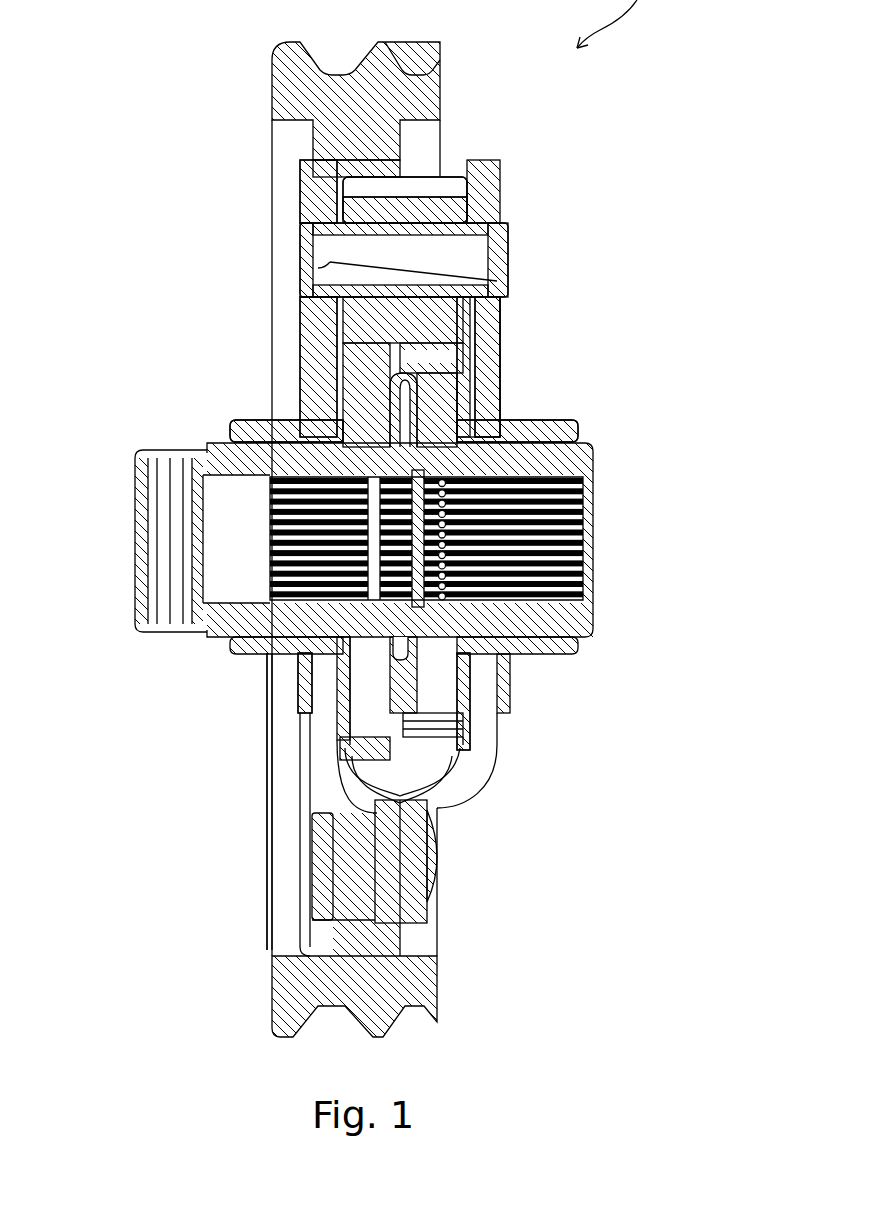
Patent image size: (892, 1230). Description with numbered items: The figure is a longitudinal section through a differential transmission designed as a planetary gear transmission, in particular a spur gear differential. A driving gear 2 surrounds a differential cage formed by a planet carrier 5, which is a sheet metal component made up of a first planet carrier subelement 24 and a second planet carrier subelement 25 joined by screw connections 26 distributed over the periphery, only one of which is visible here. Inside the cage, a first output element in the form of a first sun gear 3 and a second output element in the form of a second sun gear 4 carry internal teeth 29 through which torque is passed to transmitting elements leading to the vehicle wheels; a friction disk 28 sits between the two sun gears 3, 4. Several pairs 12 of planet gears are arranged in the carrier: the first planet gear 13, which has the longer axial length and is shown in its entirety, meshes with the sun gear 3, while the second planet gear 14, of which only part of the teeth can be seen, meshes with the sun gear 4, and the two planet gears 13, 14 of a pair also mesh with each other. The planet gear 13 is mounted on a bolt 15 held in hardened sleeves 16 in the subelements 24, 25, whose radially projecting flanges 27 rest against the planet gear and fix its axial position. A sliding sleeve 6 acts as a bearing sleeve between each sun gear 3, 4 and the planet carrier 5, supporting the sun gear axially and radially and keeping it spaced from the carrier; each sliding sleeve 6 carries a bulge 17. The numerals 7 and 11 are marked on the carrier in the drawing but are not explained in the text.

The driving gear 2 is at (300, 84).
The first sun gear 3 is at (232, 465).
The second sun gear 4 is at (592, 452).
The planet carrier 5 is at (305, 330).
The sliding sleeve 6 is at (245, 660).
The flange 7 is at (300, 410).
The radial flange section 11 is at (404, 431).
The pair of planet gears 12 is at (405, 200).
The first planet gear 13 is at (435, 195).
The second planet gear 14 is at (500, 333).
The bolt 15 is at (330, 262).
The sleeve 16 is at (300, 225).
The bulge 17 is at (270, 718).
The first planet carrier subelement 24 is at (302, 795).
The second planet carrier subelement 25 is at (500, 373).
The screw connection 26 is at (448, 866).
The radially projecting flange 27 is at (470, 178).
The friction disk 28 is at (510, 697).
The internal teeth 29 is at (597, 523).